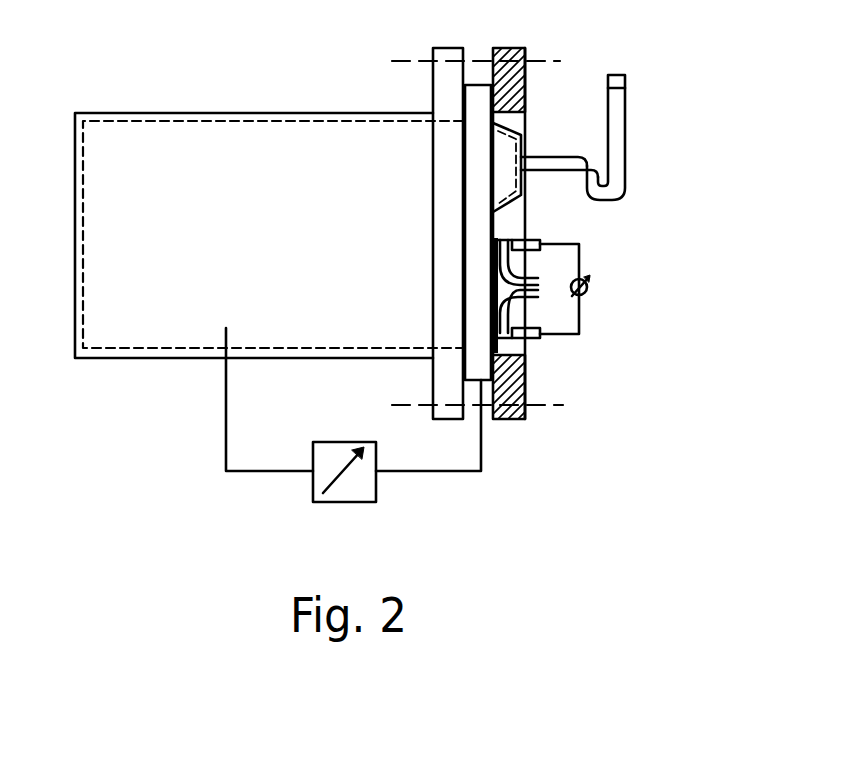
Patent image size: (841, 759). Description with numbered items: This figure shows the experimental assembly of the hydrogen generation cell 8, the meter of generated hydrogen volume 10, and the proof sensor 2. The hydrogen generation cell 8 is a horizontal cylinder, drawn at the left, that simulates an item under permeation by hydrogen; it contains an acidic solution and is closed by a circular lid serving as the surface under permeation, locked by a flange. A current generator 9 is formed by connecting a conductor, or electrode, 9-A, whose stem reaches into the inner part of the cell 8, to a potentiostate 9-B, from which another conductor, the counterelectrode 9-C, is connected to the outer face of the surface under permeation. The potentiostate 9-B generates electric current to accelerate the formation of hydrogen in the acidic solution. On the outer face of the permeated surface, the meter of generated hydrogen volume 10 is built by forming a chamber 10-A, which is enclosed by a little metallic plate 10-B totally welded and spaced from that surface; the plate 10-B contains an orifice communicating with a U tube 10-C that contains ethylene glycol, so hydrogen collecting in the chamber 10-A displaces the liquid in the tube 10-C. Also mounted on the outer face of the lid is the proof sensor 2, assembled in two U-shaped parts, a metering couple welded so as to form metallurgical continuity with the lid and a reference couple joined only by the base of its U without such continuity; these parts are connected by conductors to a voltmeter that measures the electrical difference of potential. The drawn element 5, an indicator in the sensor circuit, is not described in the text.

The hydrogen generation cell 8 is at (140, 113).
The meter of generated hydrogen volume 10 is at (634, 100).
The chamber 10-A is at (505, 157).
The little metallic plate 10-B is at (522, 142).
The U tube 10-C is at (617, 140).
The proof sensor 2 is at (584, 320).
The ammeter 5 is at (590, 288).
The current generator 9 is at (362, 432).
The conductor (electrode) 9-A is at (226, 388).
The potentiostate 9-B is at (325, 473).
The conductor (counterelectrode) 9-C is at (483, 438).